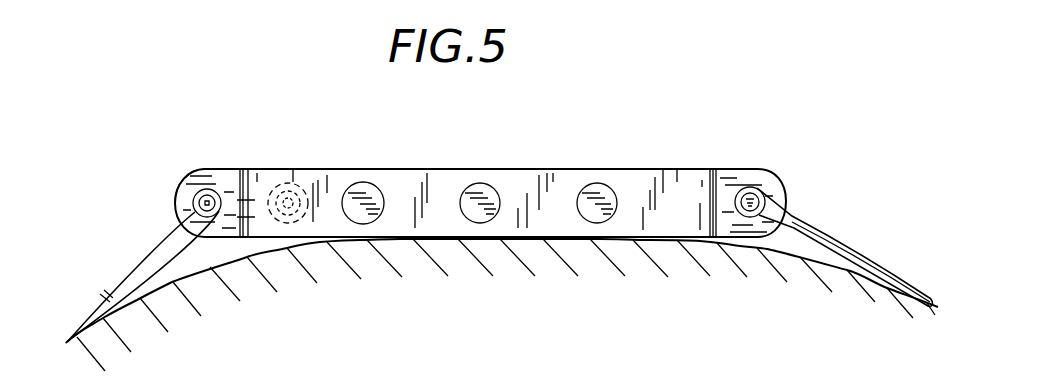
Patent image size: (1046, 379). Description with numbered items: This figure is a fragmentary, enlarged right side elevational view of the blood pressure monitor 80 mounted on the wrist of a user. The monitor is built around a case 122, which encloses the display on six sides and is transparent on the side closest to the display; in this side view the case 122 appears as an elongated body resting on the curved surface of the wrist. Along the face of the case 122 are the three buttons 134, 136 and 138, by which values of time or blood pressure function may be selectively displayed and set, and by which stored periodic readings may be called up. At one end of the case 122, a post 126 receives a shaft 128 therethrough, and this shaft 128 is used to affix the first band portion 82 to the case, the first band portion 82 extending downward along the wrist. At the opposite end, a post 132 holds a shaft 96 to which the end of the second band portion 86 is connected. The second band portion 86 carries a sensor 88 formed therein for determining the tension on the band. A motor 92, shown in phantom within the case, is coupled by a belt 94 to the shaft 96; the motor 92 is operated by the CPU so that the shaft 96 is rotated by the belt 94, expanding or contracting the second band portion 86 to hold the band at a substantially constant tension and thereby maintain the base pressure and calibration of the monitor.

The blood pressure monitor 80 is at (675, 168).
The first band portion 82 is at (880, 262).
The second band portion 86 is at (160, 248).
The sensor 88 is at (105, 292).
The motor 92 is at (291, 172).
The belt 94 is at (258, 168).
The shaft 96 is at (204, 196).
The case 122 is at (700, 252).
The post 126 is at (762, 177).
The shaft 128 is at (755, 216).
The post 132 is at (214, 170).
The button 134 is at (597, 220).
The button 136 is at (480, 218).
The button 138 is at (364, 218).